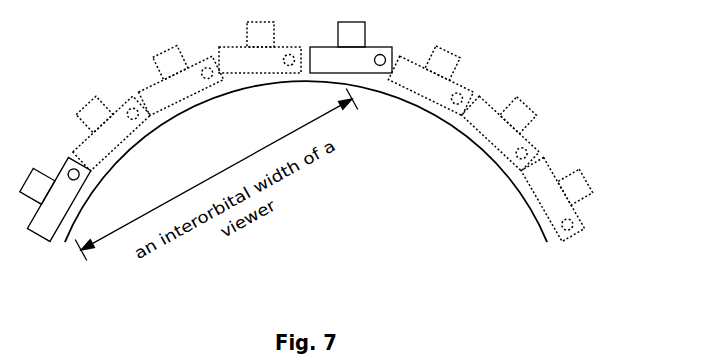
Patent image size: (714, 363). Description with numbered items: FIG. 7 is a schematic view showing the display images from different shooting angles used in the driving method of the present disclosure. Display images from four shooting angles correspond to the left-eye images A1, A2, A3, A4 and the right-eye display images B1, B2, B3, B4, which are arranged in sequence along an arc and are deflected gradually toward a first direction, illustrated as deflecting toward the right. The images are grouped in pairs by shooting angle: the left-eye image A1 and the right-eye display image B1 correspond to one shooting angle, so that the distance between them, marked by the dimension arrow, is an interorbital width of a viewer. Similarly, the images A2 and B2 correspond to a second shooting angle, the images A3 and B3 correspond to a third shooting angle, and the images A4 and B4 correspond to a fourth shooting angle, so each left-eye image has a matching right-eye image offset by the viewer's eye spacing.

The left-eye image A1 is at (56, 193).
The left-eye image A2 is at (104, 129).
The left-eye image A3 is at (176, 84).
The left-eye image A4 is at (260, 67).
The right-eye display image B1 is at (351, 69).
The right-eye display image B2 is at (436, 86).
The right-eye display image B3 is at (508, 126).
The right-eye display image B4 is at (552, 193).